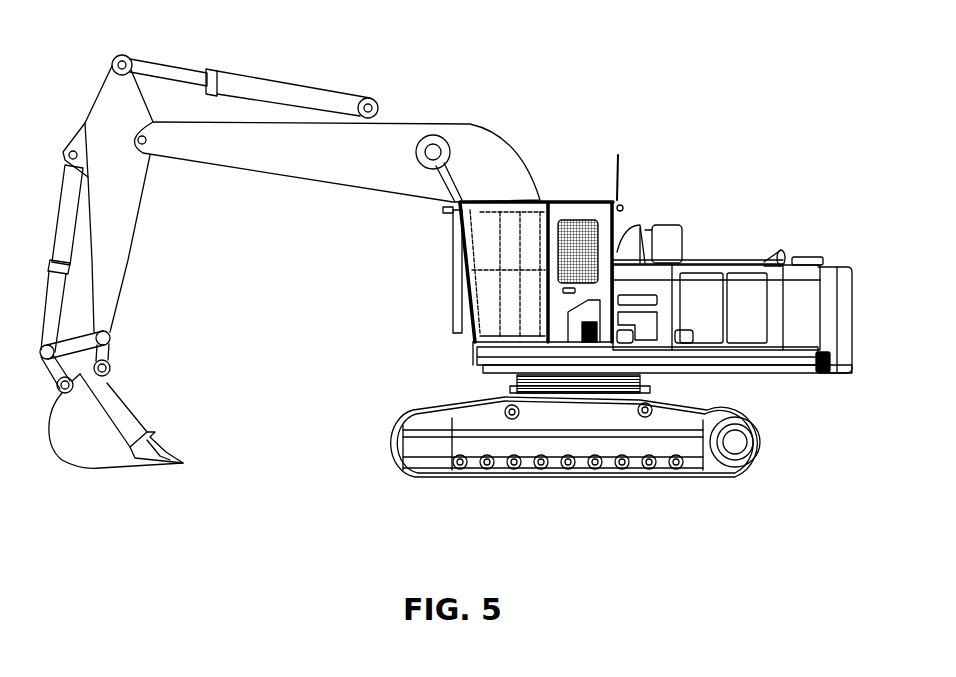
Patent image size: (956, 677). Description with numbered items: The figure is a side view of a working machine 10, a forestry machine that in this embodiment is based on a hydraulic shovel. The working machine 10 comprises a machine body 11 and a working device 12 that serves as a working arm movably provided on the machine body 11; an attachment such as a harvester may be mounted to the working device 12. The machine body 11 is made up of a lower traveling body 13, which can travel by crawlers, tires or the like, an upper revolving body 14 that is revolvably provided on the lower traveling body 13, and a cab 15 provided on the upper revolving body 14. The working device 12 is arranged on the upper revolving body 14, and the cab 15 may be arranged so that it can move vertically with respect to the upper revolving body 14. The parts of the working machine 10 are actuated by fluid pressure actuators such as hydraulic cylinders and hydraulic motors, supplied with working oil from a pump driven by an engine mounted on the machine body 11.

The working machine 10 is at (548, 80).
The machine body 11 is at (690, 207).
The working device 12 is at (368, 67).
The lower traveling body 13 is at (775, 423).
The upper revolving body 14 is at (840, 253).
The cab 15 is at (577, 173).